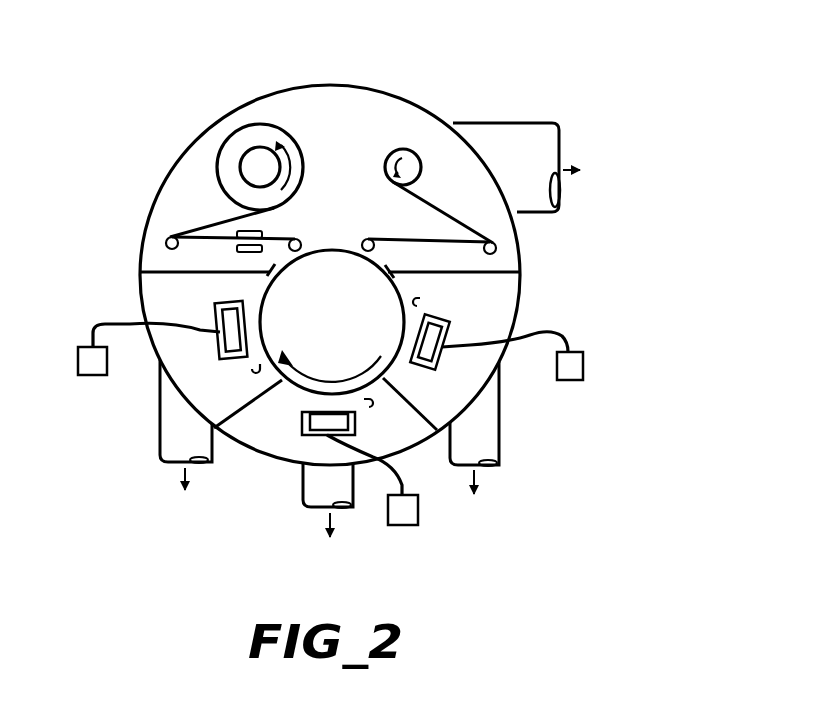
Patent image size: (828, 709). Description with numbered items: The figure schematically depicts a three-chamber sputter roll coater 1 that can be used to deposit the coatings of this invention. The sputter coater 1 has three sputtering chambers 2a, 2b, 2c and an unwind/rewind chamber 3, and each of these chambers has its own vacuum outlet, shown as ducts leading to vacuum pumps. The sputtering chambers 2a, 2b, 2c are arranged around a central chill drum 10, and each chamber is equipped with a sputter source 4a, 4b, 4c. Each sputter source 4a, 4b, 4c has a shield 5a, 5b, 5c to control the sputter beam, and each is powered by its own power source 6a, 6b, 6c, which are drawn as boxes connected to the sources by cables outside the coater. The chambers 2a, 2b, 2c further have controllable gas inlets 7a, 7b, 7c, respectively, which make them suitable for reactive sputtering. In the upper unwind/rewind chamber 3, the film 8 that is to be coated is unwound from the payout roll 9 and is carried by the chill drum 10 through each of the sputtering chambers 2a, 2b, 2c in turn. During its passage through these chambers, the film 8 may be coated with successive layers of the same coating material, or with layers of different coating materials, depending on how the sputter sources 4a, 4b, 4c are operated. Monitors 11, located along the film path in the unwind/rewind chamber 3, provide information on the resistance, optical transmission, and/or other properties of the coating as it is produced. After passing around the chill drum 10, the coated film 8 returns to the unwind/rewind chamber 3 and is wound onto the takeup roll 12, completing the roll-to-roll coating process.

The sputter coater 1 is at (232, 108).
The sputtering chamber 2a is at (457, 390).
The sputtering chamber 2b is at (277, 437).
The sputtering chamber 2c is at (192, 377).
The unwind/rewind chamber 3 is at (417, 117).
The sputter source 4a is at (447, 333).
The sputter source 4b is at (340, 467).
The sputter source 4c is at (212, 326).
The shield 5a is at (445, 355).
The shield 5b is at (322, 428).
The shield 5c is at (213, 340).
The power source 6a is at (570, 373).
The power source 6b is at (398, 513).
The power source 6c is at (93, 365).
The controllable gas inlet 7a is at (420, 301).
The controllable gas inlet 7b is at (370, 410).
The controllable gas inlet 7c is at (254, 372).
The film 8 is at (435, 203).
The payout roll 9 is at (390, 153).
The chill drum 10 is at (323, 270).
The monitors 11 is at (227, 248).
The takeup roll 12 is at (220, 148).